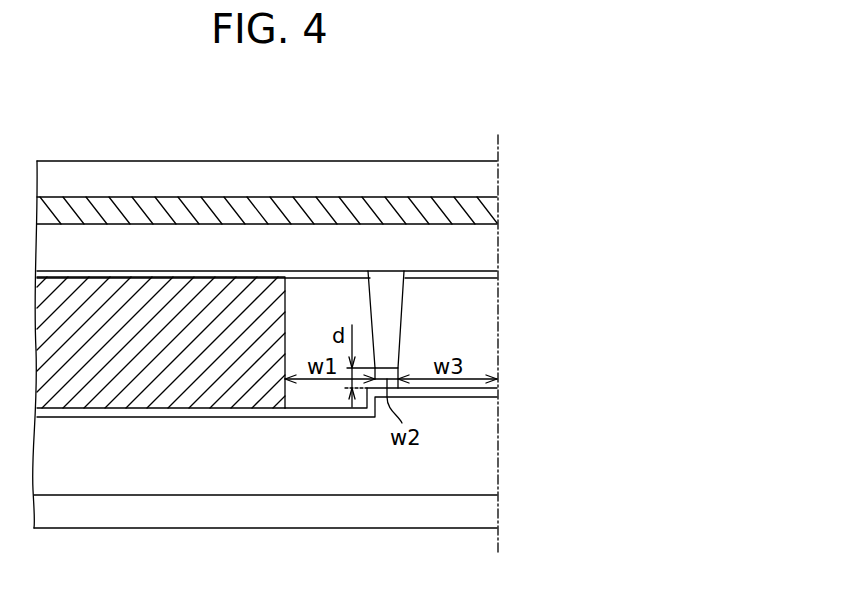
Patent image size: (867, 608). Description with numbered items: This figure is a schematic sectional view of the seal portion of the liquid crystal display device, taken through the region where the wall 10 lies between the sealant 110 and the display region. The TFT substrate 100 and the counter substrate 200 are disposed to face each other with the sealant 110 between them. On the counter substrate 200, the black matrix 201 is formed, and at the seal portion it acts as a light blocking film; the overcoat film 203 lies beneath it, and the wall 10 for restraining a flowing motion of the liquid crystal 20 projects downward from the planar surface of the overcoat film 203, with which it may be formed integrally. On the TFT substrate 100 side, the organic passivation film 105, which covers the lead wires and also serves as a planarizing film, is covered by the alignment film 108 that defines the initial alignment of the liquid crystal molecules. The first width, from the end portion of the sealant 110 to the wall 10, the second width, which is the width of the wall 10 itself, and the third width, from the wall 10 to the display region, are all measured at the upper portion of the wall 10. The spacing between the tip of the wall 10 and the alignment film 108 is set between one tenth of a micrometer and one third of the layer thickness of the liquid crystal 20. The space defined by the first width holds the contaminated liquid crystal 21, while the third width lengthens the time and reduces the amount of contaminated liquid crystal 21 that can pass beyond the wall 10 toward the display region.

The counter substrate 200 is at (131, 176).
The black matrix 201 is at (231, 210).
The overcoat film 203 is at (473, 252).
The alignment film 108 is at (302, 272).
The contaminated liquid crystal 21 is at (327, 310).
The wall 10 is at (387, 290).
The liquid crystal 20 is at (437, 318).
The sealant 110 is at (198, 362).
The organic passivation film 105 is at (473, 458).
The TFT substrate 100 is at (114, 518).